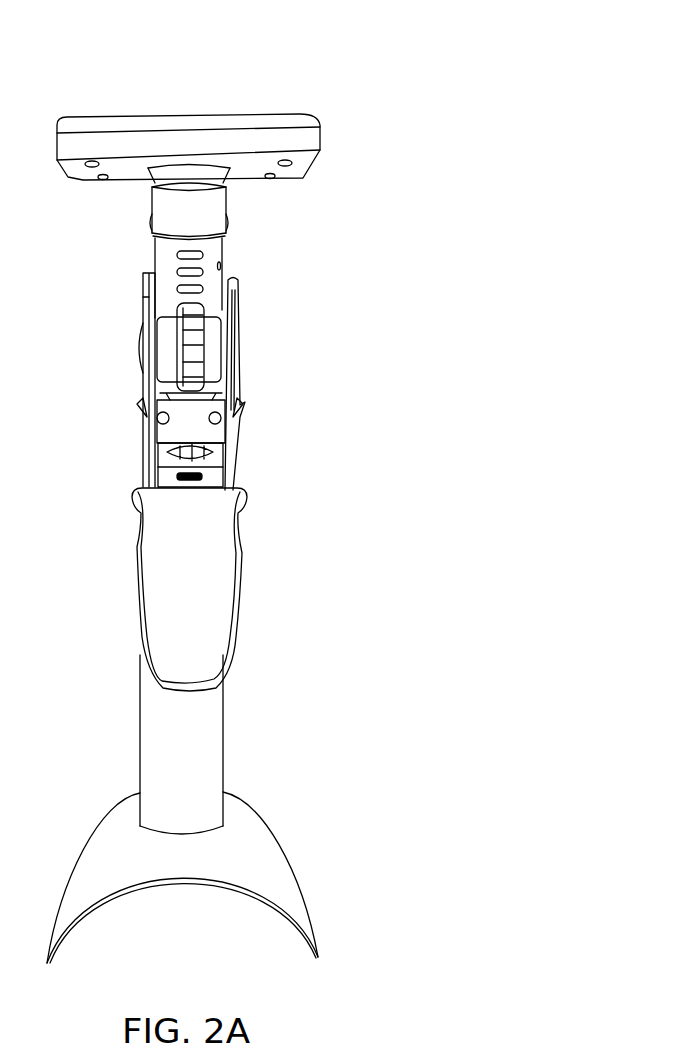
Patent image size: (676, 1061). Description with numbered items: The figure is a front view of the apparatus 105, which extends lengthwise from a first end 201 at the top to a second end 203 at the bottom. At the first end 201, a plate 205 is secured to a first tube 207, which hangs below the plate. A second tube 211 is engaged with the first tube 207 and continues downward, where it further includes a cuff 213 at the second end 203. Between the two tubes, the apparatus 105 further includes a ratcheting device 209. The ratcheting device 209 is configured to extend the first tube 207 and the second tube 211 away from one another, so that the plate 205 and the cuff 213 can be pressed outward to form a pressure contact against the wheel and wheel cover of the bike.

The apparatus 105 is at (398, 44).
The first end 201 is at (166, 98).
The second end 203 is at (185, 906).
The plate 205 is at (322, 144).
The first tube 207 is at (224, 253).
The ratcheting device 209 is at (260, 573).
The second tube 211 is at (223, 741).
The cuff 213 is at (296, 888).